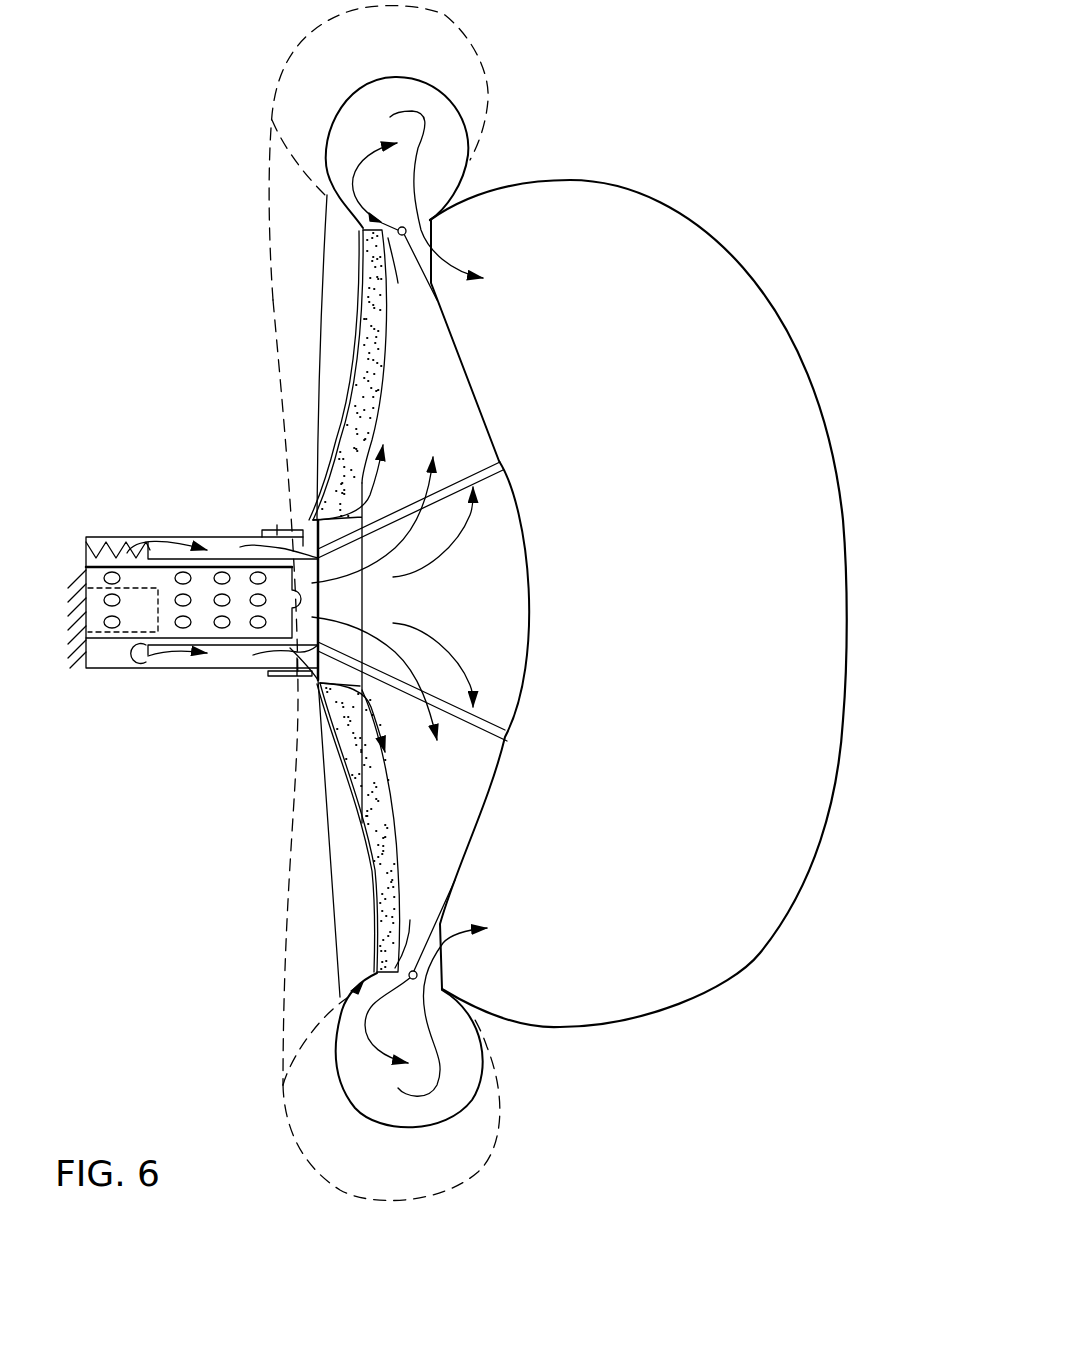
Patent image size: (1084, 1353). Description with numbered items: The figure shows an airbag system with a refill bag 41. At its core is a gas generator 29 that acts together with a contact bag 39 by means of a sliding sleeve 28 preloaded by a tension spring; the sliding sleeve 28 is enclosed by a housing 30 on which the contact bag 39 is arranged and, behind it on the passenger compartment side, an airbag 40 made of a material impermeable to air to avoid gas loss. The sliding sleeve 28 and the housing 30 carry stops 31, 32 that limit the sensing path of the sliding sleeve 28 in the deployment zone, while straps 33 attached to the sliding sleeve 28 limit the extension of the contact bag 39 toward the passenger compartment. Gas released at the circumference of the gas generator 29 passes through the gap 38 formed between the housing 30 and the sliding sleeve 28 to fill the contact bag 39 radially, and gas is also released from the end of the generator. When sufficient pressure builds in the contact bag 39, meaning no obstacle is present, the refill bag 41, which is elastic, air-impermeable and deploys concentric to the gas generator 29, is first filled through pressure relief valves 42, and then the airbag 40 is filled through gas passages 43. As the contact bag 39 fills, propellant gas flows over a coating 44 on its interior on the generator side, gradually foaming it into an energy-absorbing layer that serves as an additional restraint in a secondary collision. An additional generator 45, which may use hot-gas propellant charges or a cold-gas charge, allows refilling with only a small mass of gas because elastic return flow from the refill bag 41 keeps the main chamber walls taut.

The sliding sleeve 28 is at (172, 645).
The gas generator 29 is at (137, 580).
The housing 30 is at (175, 537).
The stop 31 is at (148, 655).
The stop 32 is at (297, 662).
The straps 33 is at (483, 725).
The gap 38 is at (240, 547).
The contact bag 39 is at (528, 573).
The airbag 40 is at (631, 637).
The refill bag 41 is at (463, 117).
The pressure relief valves 42 is at (380, 218).
The gas passages 43 is at (422, 220).
The coating 44 is at (373, 872).
The additional generator 45 is at (73, 574).